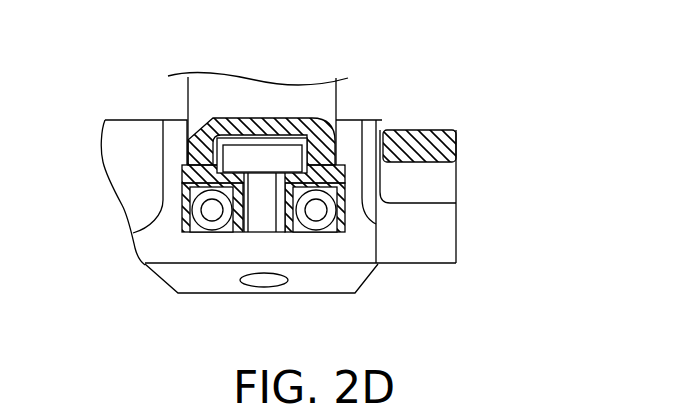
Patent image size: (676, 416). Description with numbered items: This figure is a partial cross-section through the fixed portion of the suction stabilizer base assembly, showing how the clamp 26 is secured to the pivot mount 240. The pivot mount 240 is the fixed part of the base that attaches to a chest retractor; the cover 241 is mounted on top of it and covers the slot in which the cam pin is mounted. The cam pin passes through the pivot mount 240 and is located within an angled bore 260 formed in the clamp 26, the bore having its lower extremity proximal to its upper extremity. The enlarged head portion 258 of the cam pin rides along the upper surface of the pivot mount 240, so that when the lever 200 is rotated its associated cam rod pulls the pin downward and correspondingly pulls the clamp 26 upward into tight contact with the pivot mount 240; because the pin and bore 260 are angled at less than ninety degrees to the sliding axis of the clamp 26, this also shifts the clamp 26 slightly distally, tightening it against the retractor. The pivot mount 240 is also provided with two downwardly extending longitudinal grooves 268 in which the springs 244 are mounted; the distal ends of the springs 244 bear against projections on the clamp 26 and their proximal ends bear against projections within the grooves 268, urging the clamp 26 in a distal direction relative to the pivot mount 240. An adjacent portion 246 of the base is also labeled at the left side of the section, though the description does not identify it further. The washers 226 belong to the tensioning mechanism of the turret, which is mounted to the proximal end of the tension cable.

The clamp 26 is at (220, 283).
The lever 200 is at (457, 180).
The washers 226 is at (265, 210).
The pivot mount 240 is at (213, 90).
The cover 241 is at (277, 118).
The springs 244 is at (180, 212).
The housing wall 246 is at (105, 123).
The enlarged head portion 258 is at (285, 162).
The angled bore 260 is at (294, 251).
The longitudinal grooves 268 is at (172, 244).